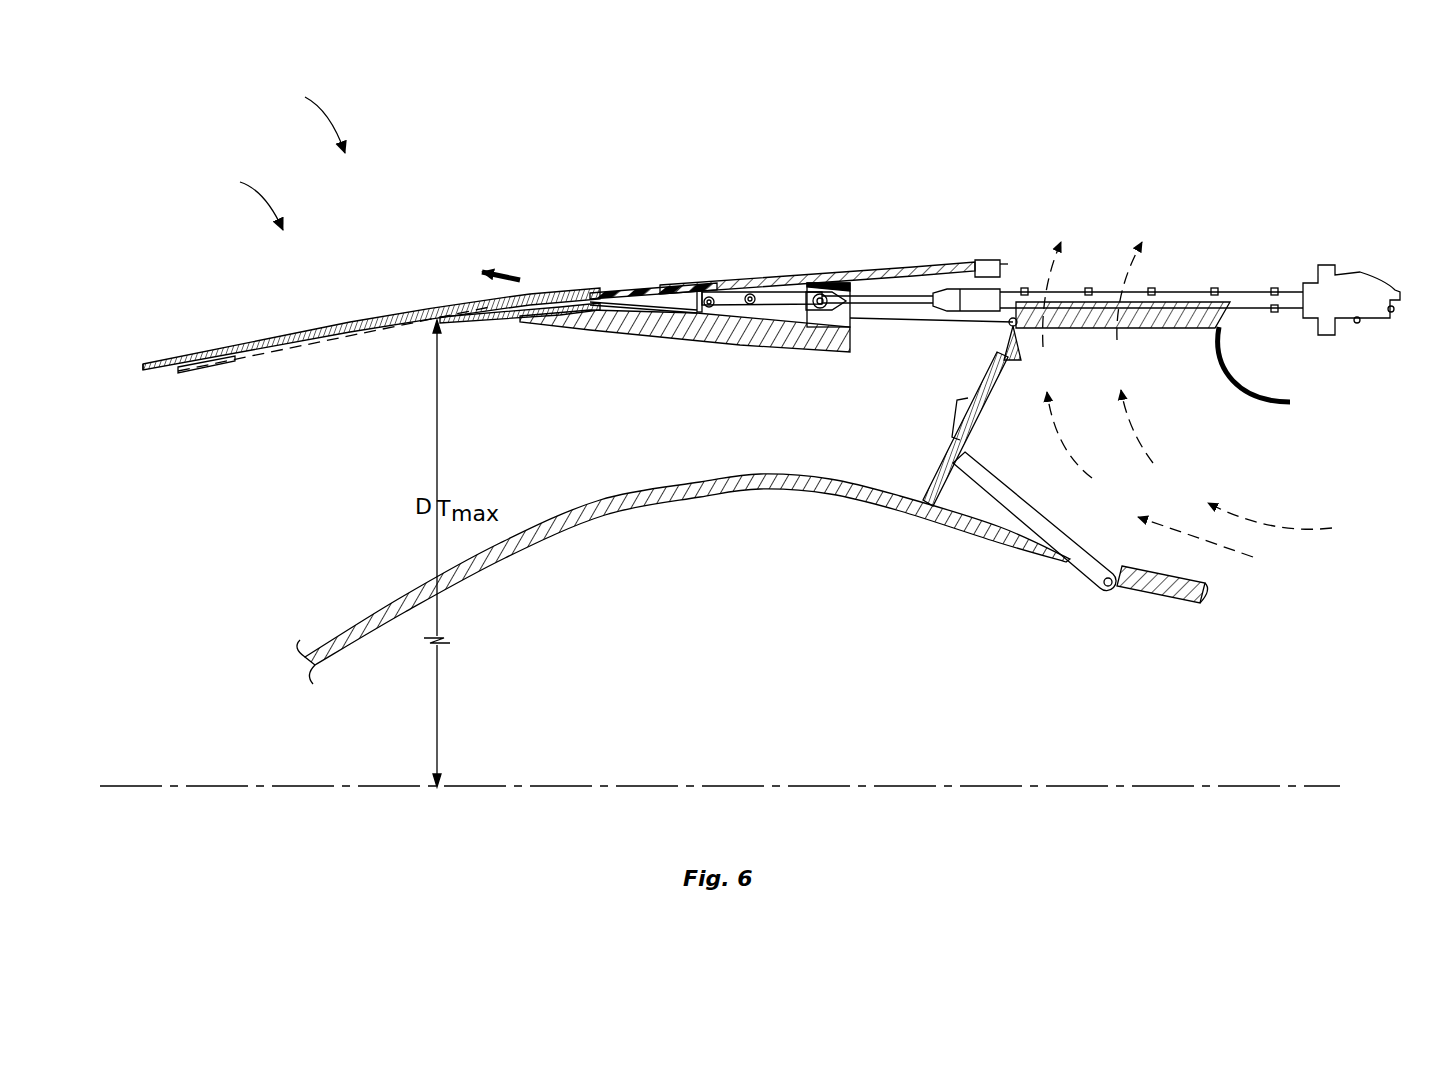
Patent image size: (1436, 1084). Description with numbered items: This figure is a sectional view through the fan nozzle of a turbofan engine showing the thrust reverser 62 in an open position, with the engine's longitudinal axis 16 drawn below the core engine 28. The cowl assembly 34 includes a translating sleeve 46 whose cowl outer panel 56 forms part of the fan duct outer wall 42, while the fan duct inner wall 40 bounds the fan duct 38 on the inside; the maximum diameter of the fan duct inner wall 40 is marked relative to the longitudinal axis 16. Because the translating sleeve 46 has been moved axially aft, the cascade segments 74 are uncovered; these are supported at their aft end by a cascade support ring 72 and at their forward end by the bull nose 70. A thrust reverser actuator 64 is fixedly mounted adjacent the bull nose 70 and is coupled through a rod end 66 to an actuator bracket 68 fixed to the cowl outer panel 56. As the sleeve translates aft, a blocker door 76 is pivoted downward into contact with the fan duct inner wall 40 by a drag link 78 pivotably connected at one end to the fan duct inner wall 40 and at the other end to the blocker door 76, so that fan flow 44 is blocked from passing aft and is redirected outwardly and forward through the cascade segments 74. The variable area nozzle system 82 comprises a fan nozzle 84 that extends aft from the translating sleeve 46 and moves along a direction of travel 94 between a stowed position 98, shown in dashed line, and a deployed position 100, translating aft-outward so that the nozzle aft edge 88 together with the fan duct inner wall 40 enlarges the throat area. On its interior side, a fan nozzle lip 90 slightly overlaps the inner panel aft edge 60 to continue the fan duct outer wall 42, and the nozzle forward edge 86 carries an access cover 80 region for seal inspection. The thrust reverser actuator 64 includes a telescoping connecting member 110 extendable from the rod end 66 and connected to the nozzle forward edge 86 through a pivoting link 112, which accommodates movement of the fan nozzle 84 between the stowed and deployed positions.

The longitudinal axis 16 is at (1243, 790).
The core engine 28 is at (749, 686).
The cowl assembly 34 is at (292, 114).
The translating sleeve 46 is at (292, 114).
The fan duct 38 is at (683, 550).
The fan duct inner wall 40 is at (737, 478).
The fan duct outer wall 42 is at (366, 320).
The fan flow 44 is at (1292, 528).
The cowl outer panel 56 is at (826, 252).
The inner panel aft edge 60 is at (540, 300).
The thrust reverser 62 is at (1015, 226).
The thrust reverser actuator 64 is at (1382, 318).
The rod end 66 is at (812, 292).
The actuator bracket 68 is at (840, 322).
The bull nose 70 is at (1270, 405).
The cascade support ring 72 is at (1020, 326).
The cascade segments 74 is at (1163, 330).
The blocker door 76 is at (985, 380).
The drag link 78 is at (1022, 515).
The access cover 80 is at (680, 290).
The variable area nozzle system 82 is at (244, 199).
The fan nozzle 84 is at (371, 315).
The nozzle forward edge 86 is at (622, 305).
The nozzle aft edge 88 is at (142, 364).
The fan nozzle lip 90 is at (500, 322).
The direction of travel 94 is at (494, 270).
The stowed position 98 is at (283, 372).
The deployed position 100 is at (371, 315).
The connecting member 110 is at (759, 256).
The link 112 is at (726, 300).